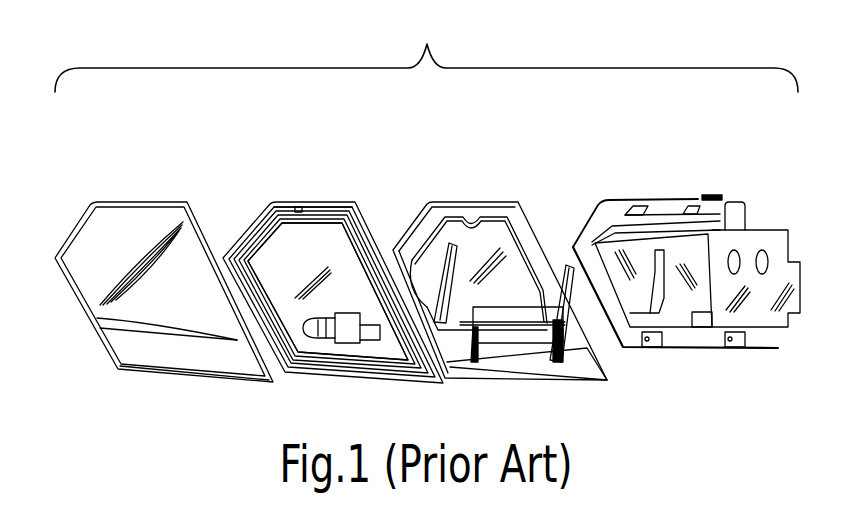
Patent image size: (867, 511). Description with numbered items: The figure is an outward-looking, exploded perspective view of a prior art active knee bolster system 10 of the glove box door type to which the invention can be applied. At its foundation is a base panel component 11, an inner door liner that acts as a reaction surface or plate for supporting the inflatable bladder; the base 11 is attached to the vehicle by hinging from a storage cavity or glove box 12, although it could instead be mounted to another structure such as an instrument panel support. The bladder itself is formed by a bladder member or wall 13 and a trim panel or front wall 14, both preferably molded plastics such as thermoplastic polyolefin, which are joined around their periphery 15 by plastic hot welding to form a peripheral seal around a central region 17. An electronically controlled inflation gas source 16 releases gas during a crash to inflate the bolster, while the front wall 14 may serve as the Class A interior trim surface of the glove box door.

The active knee bolster system 10 is at (426, 55).
The base panel component 11 is at (456, 199).
The glove box 12 is at (638, 199).
The bladder member 13 is at (273, 199).
The trim panel 14 is at (147, 198).
The periphery 15 is at (333, 205).
The inflation gas source 16 is at (343, 333).
The central region 17 is at (327, 253).